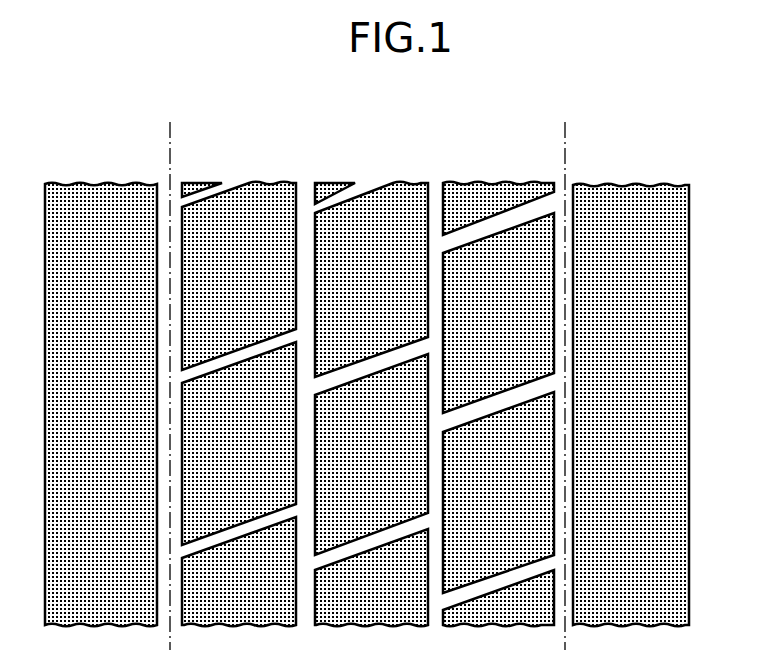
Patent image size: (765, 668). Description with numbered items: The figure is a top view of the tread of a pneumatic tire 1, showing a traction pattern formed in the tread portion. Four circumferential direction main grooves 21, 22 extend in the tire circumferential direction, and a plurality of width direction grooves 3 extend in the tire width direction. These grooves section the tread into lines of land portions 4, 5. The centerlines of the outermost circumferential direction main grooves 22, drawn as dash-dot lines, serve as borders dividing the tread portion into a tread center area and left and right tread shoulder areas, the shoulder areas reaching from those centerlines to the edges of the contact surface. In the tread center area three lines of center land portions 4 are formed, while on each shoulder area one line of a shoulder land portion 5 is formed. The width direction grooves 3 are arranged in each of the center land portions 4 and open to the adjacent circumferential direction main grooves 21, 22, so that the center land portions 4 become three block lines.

The pneumatic tire 1 is at (716, 126).
The width direction grooves 3 is at (243, 357).
The center land portions 4 is at (266, 191).
The shoulder land portion 5 is at (100, 192).
The circumferential direction main grooves 21 is at (306, 192).
The circumferential direction main grooves 22 is at (176, 188).